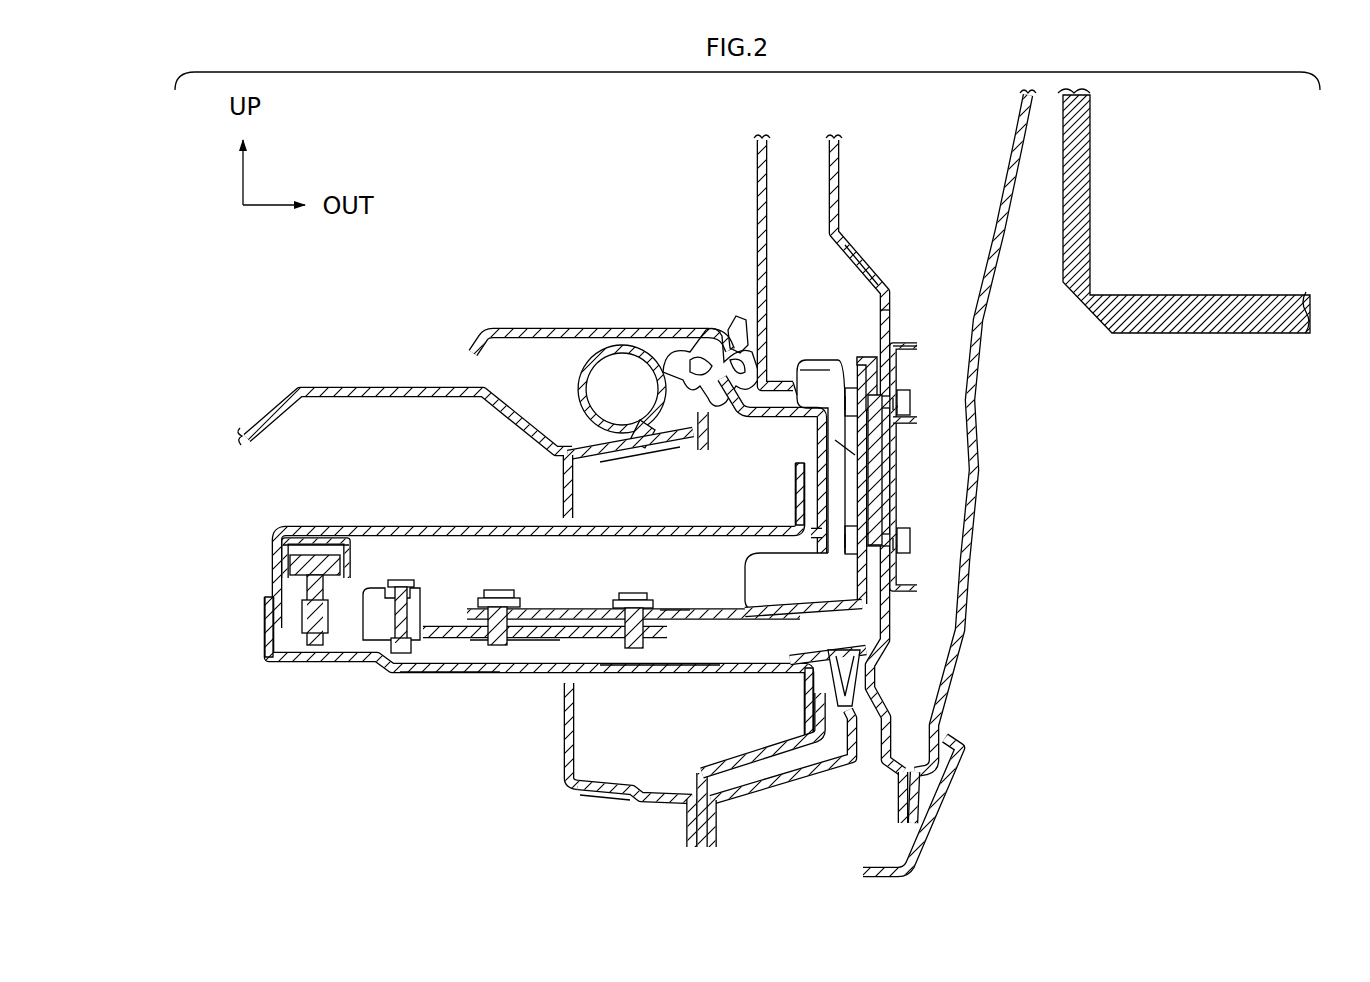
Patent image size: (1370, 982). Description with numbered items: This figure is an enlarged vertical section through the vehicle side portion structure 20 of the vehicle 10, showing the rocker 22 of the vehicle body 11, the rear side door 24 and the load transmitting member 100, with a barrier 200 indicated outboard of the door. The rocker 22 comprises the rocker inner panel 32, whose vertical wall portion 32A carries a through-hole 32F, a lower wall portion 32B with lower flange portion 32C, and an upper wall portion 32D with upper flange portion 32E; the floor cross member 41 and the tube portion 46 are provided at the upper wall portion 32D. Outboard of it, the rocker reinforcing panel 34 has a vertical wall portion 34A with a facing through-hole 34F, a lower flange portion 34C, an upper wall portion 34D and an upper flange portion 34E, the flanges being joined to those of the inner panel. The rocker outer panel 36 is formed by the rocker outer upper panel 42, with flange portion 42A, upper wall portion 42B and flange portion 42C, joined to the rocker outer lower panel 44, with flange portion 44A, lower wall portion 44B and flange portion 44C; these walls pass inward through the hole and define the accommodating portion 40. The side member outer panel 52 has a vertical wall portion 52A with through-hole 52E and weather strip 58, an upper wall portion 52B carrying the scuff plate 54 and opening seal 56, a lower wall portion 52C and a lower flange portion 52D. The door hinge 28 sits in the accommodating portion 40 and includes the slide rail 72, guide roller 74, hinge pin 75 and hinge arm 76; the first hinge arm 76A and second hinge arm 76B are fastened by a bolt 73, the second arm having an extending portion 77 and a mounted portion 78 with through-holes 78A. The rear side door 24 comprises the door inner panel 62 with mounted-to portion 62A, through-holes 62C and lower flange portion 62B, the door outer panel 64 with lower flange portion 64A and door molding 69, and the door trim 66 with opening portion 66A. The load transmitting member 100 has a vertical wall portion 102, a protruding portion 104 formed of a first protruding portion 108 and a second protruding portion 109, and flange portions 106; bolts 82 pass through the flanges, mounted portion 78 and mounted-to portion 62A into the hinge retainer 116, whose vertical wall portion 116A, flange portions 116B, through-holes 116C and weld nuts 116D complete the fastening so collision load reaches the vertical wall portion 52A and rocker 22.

The vehicle 10 is at (1212, 526).
The vehicle body 11 is at (538, 775).
The vehicle side portion structure 20 is at (1065, 568).
The rocker 22 is at (622, 802).
The rear side door 24 is at (988, 464).
The door hinge 28 is at (545, 648).
The rocker inner panel 32 is at (575, 784).
The vertical wall portion 32A is at (562, 496).
The lower wall portion 32B is at (630, 794).
The lower flange portion 32C is at (688, 828).
The upper wall portion 32D is at (614, 462).
The upper flange portion 32E is at (660, 410).
The through-hole 32F is at (577, 688).
The rocker reinforcing panel 34 is at (695, 765).
The vertical wall portion 34A is at (797, 480).
The lower flange portion 34C is at (697, 775).
The upper wall portion 34D is at (700, 450).
The upper flange portion 34E is at (735, 332).
The through-hole 34F is at (812, 693).
The rocker outer panel 36 is at (665, 672).
The accommodating portion 40 is at (442, 540).
The floor cross member 41 is at (370, 390).
The rocker outer upper panel 42 is at (416, 526).
The flange portion 42A is at (795, 513).
The upper wall portion 42B is at (608, 458).
The flange portion 42C is at (282, 562).
The rocker outer lower panel 44 is at (395, 670).
The flange portion 44A is at (805, 720).
The lower wall portion 44B is at (447, 674).
The flange portion 44C is at (266, 630).
The tube portion 46 is at (580, 390).
The side member outer panel 52 is at (800, 780).
The vertical wall portion 52A is at (790, 440).
The upper wall portion 52B is at (726, 376).
The lower wall portion 52C is at (757, 795).
The lower flange portion 52D is at (718, 828).
The through-hole 52E is at (814, 540).
The scuff plate 54 is at (590, 330).
The opening seal 56 is at (718, 338).
The weather strip 58 is at (800, 652).
The door inner panel 62 is at (826, 154).
The mounted-to portion 62A is at (864, 283).
The lower flange portion 62B is at (898, 790).
The through-holes 62C is at (908, 403).
The door outer panel 64 is at (978, 352).
The lower flange portion 64A is at (912, 818).
The door trim 66 is at (757, 163).
The opening portion 66A is at (795, 392).
The door molding 69 is at (930, 830).
The slide rail 72 is at (346, 546).
The bolt 73 is at (498, 590).
The guide roller 74 is at (298, 582).
The hinge pin 75 is at (400, 590).
The hinge arm 76 is at (594, 608).
The first hinge arm 76A is at (495, 648).
The second hinge arm 76B is at (668, 608).
The extending portion 77 is at (566, 608).
The mounted portion 78 is at (858, 586).
The through-holes 78A is at (880, 408).
The bolts 82 is at (858, 398).
The load transmitting member 100 is at (838, 358).
The vertical wall portion 102 is at (843, 452).
The protruding portion 104 is at (743, 574).
The flange portions 106 is at (887, 330).
The first protruding portion 108 is at (743, 600).
The second protruding portion 109 is at (838, 360).
The hinge retainer 116 is at (900, 343).
The vertical wall portion 116A is at (888, 480).
The flange portions 116B is at (905, 346).
The through-holes 116C is at (898, 404).
The weld nuts 116D is at (908, 418).
The barrier 200 is at (1225, 336).